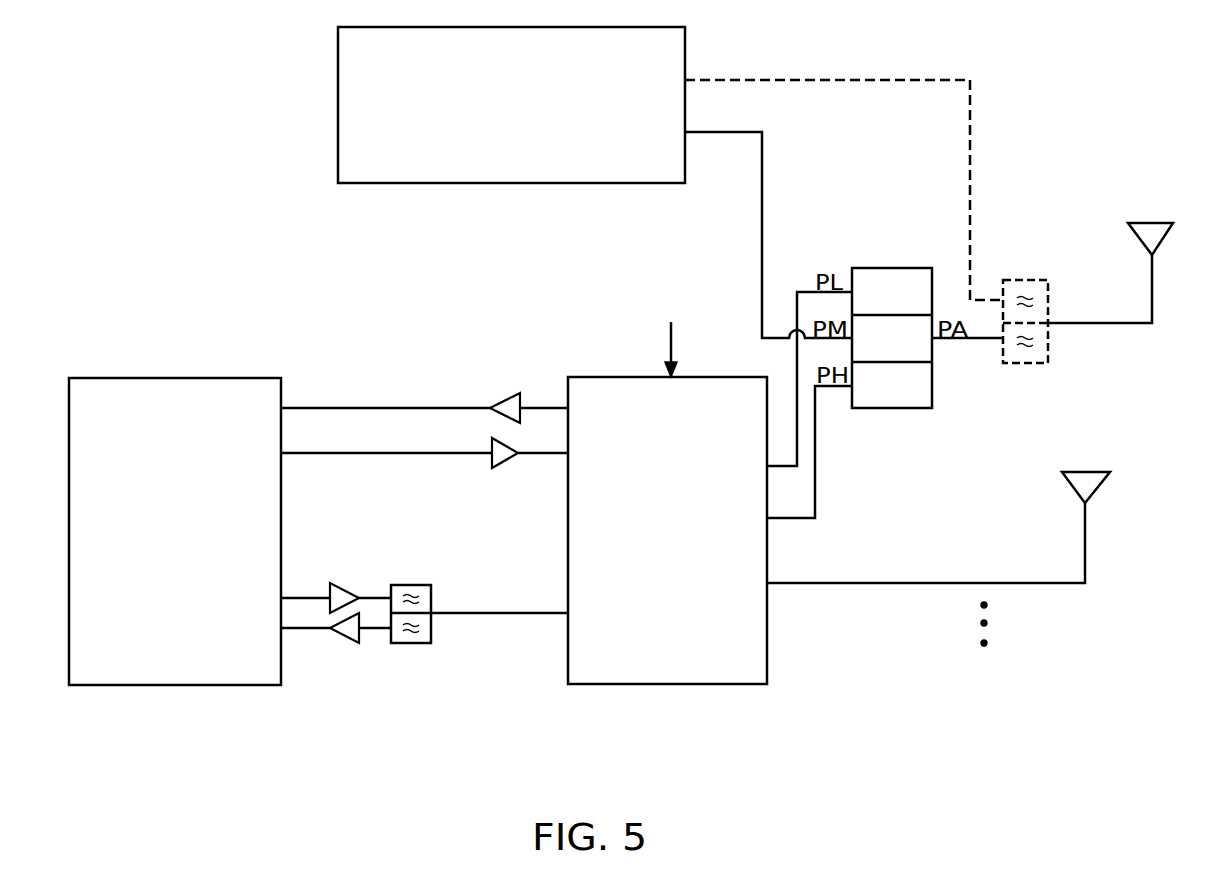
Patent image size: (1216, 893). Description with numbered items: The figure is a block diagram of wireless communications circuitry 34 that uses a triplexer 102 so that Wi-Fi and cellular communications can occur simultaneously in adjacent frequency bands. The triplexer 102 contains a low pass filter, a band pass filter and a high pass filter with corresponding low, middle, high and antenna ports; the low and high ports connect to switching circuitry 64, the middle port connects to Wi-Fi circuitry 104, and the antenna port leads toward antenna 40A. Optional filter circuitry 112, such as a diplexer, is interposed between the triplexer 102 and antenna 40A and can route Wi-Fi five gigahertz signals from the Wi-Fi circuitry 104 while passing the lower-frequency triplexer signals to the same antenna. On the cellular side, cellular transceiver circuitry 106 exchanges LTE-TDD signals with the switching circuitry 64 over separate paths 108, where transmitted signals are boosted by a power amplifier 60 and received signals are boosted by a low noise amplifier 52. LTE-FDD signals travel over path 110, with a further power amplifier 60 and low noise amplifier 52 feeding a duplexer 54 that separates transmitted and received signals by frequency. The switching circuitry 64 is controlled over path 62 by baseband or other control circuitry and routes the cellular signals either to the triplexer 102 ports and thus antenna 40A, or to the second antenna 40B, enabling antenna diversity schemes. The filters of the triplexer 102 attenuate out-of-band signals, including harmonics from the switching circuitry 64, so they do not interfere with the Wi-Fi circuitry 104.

The wireless communications circuitry 34 is at (1113, 144).
The antenna 40A is at (1164, 239).
The antenna 40B is at (1098, 478).
The low noise amplifier 52 is at (503, 463).
The duplexer 54 is at (413, 643).
The power amplifier 60 is at (503, 400).
The control path 62 is at (671, 336).
The switching circuitry 64 is at (660, 684).
The triplexer 102 is at (893, 268).
The Wi-Fi circuitry 104 is at (525, 184).
The cellular transceiver circuitry 106 is at (188, 378).
The paths 108 is at (371, 453).
The path 110 is at (485, 614).
The filter circuitry 112 is at (1028, 280).